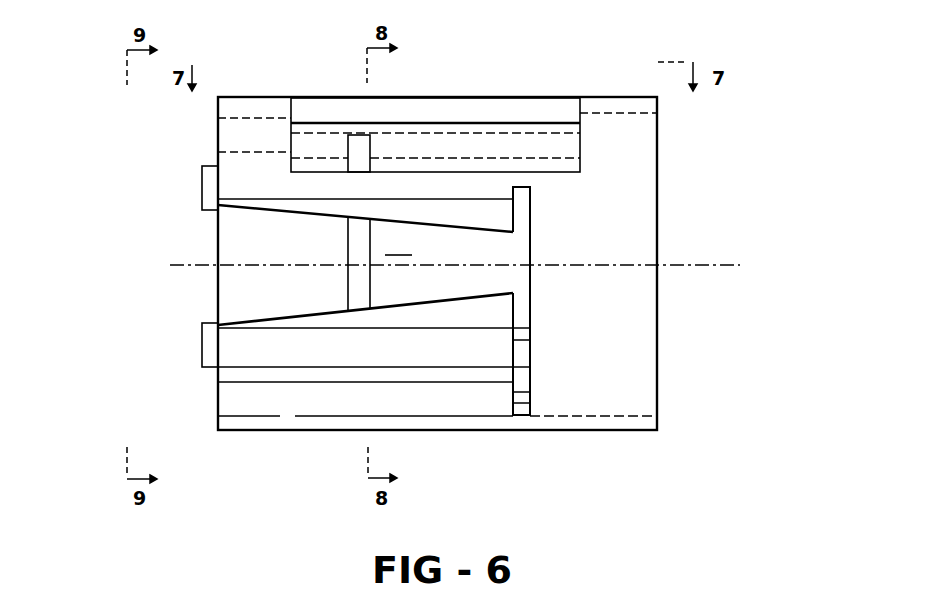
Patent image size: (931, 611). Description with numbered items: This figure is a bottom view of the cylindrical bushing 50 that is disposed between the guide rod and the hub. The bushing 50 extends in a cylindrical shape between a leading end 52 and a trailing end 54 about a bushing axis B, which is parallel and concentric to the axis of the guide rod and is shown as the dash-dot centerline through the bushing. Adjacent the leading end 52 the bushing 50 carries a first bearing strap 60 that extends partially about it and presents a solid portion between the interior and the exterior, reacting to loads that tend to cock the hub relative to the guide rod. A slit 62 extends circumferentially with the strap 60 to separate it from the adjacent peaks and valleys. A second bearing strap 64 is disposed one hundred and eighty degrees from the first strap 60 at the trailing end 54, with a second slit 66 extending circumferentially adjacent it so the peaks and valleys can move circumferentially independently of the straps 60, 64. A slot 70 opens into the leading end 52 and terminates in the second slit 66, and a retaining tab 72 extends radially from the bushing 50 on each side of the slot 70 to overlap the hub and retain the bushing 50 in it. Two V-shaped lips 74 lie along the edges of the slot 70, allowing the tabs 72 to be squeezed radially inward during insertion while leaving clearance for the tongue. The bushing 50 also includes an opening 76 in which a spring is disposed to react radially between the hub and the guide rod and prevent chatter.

The cylindrical bushing 50 is at (608, 92).
The leading end 52 is at (220, 417).
The trailing end 54 is at (657, 417).
The bearing strap 60 is at (235, 223).
The slit 62 is at (358, 243).
The second bearing strap 64 is at (575, 307).
The second slit 66 is at (530, 215).
The slot 70 is at (398, 245).
The retaining tab 72 is at (210, 178).
The V-shaped lip 74 is at (472, 220).
The opening 76 is at (580, 148).
The bushing axis B is at (630, 260).